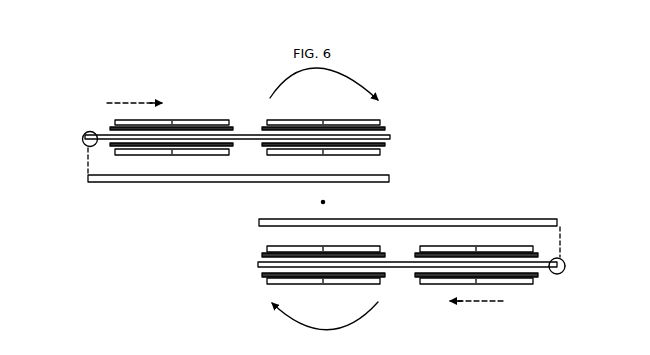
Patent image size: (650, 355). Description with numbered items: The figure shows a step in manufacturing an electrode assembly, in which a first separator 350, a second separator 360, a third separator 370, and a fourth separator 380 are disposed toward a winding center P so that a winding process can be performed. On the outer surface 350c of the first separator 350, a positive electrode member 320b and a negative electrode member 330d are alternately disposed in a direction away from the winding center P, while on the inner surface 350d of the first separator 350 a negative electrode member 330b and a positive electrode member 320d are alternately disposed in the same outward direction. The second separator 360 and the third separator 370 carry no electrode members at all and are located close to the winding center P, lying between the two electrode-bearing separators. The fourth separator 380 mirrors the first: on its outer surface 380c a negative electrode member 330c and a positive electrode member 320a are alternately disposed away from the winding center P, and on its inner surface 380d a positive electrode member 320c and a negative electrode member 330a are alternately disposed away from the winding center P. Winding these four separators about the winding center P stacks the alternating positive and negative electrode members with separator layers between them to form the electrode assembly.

The positive electrode member 320a is at (534, 284).
The positive electrode member 320b is at (381, 119).
The positive electrode member 320c is at (266, 247).
The positive electrode member 320d is at (145, 156).
The negative electrode member 330a is at (534, 246).
The negative electrode member 330b is at (381, 155).
The negative electrode member 330c is at (266, 282).
The negative electrode member 330d is at (187, 119).
The first separator 350 is at (240, 135).
The outer surface of the first separator 350c is at (90, 131).
The inner surface of the first separator 350d is at (86, 145).
The second separator 360 is at (108, 183).
The third separator 370 is at (470, 218).
The fourth separator 380 is at (402, 268).
The outer surface of the fourth separator 380c is at (564, 272).
The inner surface of the fourth separator 380d is at (564, 262).
The winding center P is at (332, 202).